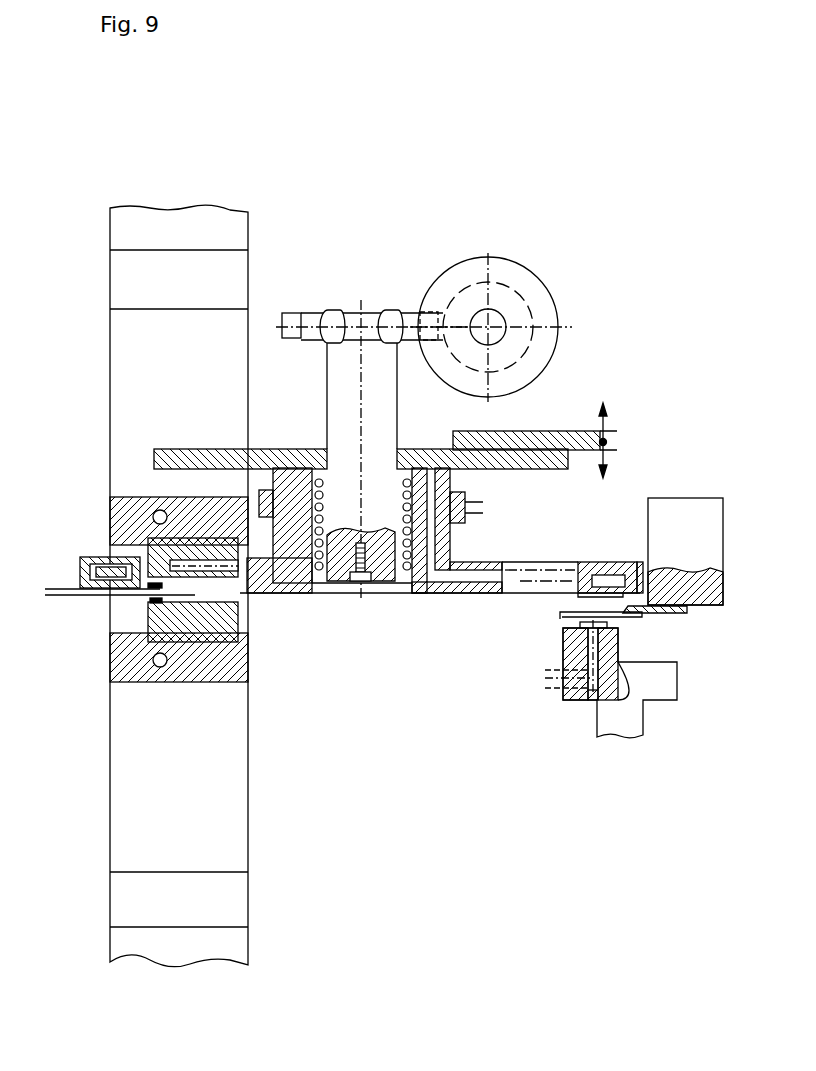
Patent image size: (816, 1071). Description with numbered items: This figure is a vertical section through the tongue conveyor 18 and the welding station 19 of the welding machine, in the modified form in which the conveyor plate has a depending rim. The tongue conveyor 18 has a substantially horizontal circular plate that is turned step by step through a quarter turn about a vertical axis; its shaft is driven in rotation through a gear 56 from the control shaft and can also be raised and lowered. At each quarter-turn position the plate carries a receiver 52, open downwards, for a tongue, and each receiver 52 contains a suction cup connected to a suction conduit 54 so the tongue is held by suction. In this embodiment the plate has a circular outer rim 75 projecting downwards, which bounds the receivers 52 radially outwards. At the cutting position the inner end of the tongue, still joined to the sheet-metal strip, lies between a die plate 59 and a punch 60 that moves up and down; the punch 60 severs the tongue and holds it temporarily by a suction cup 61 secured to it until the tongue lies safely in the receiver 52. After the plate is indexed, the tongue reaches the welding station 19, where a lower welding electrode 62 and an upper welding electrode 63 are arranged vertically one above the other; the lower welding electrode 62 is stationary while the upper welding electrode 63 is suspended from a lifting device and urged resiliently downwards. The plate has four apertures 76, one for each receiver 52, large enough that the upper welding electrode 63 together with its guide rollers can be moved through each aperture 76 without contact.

The tongue conveyor 18 is at (398, 376).
The welding station 19 is at (82, 664).
The receiver 52 is at (595, 595).
The suction conduit 54 is at (430, 541).
The gear 56 is at (407, 276).
The die plate 59 is at (667, 614).
The punch 60 is at (570, 657).
The suction cup 61 is at (583, 621).
The lower welding electrode 62 is at (232, 625).
The upper welding electrode 63 is at (168, 547).
The circular outer rim 75 is at (95, 590).
The aperture 76 is at (540, 575).